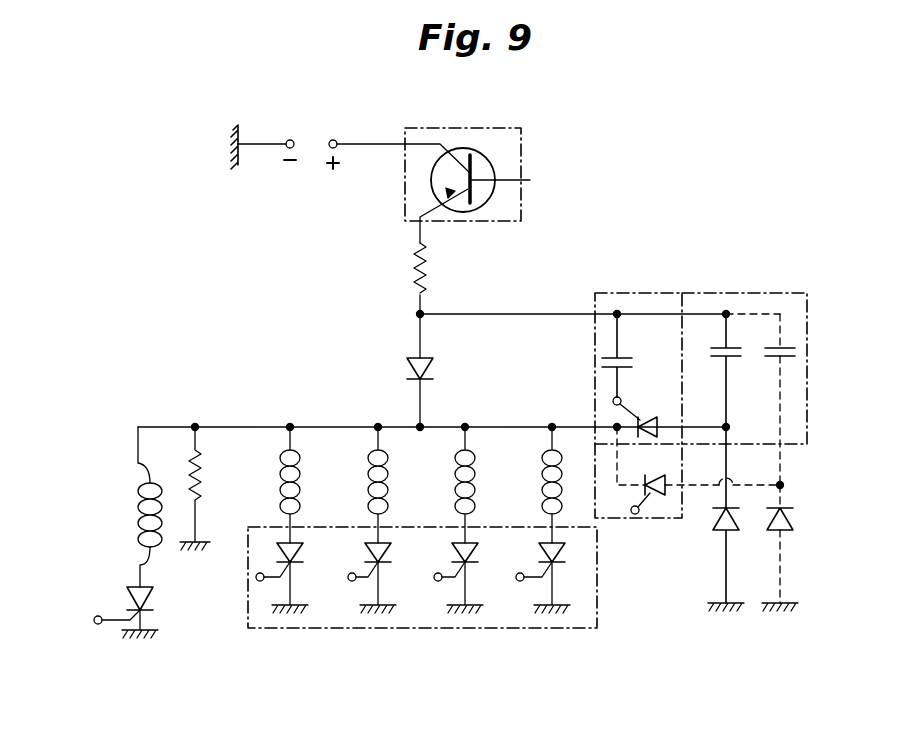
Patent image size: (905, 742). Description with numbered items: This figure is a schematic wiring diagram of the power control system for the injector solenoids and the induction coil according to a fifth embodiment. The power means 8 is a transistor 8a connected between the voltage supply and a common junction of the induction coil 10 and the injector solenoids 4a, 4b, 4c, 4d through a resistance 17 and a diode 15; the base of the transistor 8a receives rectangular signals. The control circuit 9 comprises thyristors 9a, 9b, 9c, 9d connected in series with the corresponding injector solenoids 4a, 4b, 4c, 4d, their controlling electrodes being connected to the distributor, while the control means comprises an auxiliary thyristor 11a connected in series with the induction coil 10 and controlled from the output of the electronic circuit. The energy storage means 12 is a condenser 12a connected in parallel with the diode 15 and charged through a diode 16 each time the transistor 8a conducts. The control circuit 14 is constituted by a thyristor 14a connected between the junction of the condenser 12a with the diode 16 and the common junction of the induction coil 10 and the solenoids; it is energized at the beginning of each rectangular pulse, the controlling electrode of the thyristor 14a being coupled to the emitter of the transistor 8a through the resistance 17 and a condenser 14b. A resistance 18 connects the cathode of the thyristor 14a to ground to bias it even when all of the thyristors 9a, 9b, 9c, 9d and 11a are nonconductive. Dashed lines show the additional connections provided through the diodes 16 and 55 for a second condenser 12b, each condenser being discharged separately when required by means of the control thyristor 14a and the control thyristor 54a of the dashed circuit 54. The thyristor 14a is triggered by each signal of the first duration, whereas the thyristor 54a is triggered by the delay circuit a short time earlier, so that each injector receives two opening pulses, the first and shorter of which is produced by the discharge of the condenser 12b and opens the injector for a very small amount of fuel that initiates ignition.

The power means 8 is at (479, 186).
The transistor 8a is at (485, 206).
The resistance 17 is at (412, 272).
The diode 15 is at (405, 366).
The induction coil 10 is at (128, 521).
The auxiliary thyristor 11a is at (150, 597).
The resistance 18 is at (201, 478).
The injector solenoid 4a is at (296, 496).
The injector solenoid 4b is at (384, 496).
The injector solenoid 4c is at (471, 496).
The injector solenoid 4d is at (558, 496).
The control circuit 9 is at (437, 580).
The thyristor 9a is at (303, 556).
The thyristor 9b is at (391, 556).
The thyristor 9c is at (478, 556).
The thyristor 9d is at (565, 556).
The control circuit 14 is at (638, 385).
The thyristor 14a is at (656, 405).
The condenser 14b is at (637, 355).
The energy storage means 12 is at (744, 369).
The condenser 12a is at (718, 364).
The condenser 12b is at (772, 364).
The control thyristor circuit 54 is at (698, 507).
The control thyristor 54a is at (658, 497).
The diode 16 is at (718, 533).
The diode 55 is at (773, 548).